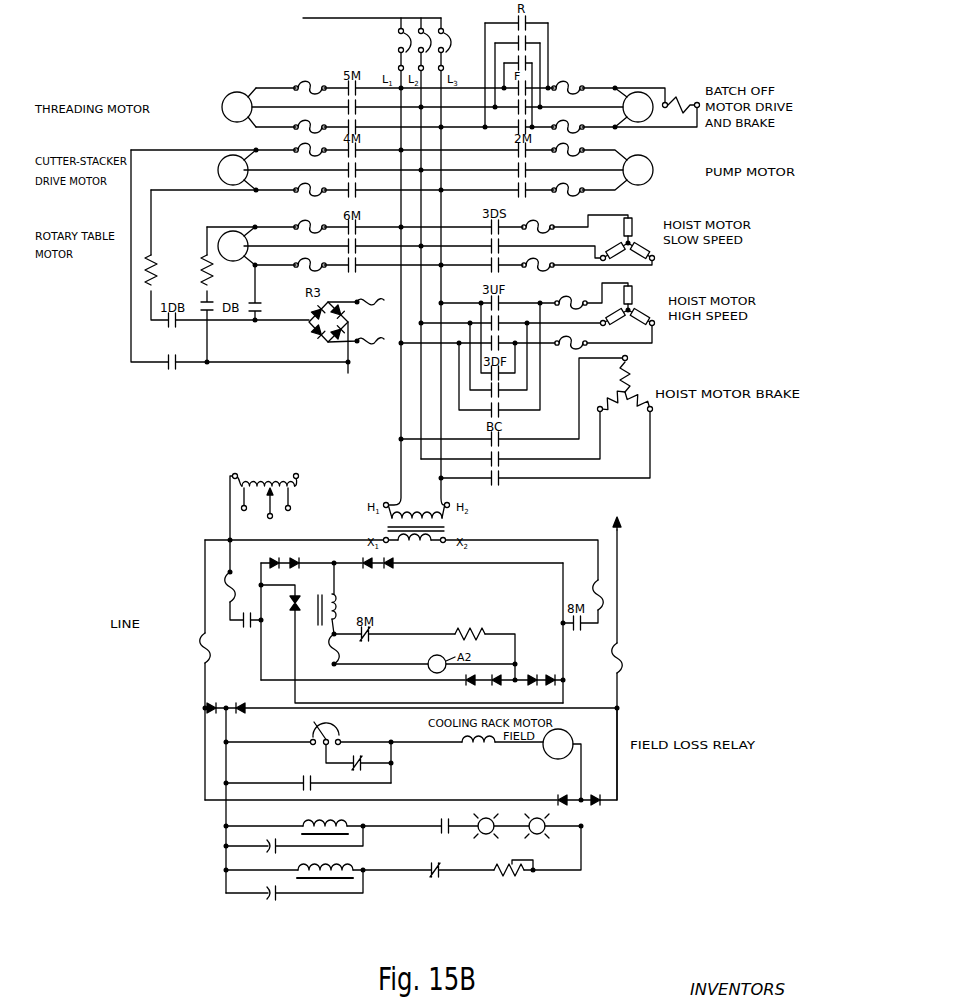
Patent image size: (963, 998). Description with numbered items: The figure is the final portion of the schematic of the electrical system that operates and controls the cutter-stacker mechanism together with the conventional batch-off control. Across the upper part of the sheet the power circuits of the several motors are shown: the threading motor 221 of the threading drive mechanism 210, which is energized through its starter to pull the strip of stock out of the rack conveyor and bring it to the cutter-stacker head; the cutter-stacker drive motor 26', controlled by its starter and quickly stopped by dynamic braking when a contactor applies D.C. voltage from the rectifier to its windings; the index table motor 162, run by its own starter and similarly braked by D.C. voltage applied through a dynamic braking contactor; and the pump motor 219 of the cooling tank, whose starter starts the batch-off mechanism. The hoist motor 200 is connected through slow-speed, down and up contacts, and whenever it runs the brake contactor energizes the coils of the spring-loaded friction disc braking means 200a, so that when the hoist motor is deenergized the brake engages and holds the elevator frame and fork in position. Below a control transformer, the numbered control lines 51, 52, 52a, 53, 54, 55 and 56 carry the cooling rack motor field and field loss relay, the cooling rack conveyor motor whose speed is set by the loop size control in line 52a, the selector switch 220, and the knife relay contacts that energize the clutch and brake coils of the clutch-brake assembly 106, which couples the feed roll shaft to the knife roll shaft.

The drive mechanism 210 is at (233, 82).
The threading motor 221 is at (225, 104).
The cutter-stacker drive motor 26' is at (219, 170).
The index table motor 162 is at (234, 233).
The pump motor 219 is at (647, 172).
The hoist motor 200 is at (633, 241).
The friction disc braking means 200a is at (632, 390).
The selector switch 220 is at (342, 721).
The clutch-brake assembly 106 is at (352, 867).
The line 51 is at (213, 585).
The line 52 is at (340, 655).
The line 52a is at (370, 764).
The line 53 is at (278, 762).
The line 54 is at (277, 784).
The line 55 is at (373, 822).
The line 56 is at (372, 852).